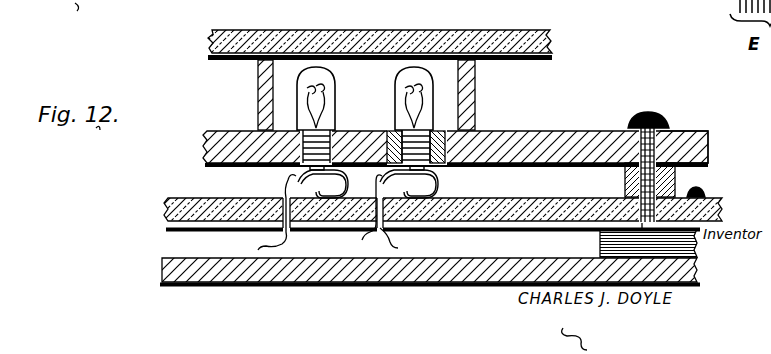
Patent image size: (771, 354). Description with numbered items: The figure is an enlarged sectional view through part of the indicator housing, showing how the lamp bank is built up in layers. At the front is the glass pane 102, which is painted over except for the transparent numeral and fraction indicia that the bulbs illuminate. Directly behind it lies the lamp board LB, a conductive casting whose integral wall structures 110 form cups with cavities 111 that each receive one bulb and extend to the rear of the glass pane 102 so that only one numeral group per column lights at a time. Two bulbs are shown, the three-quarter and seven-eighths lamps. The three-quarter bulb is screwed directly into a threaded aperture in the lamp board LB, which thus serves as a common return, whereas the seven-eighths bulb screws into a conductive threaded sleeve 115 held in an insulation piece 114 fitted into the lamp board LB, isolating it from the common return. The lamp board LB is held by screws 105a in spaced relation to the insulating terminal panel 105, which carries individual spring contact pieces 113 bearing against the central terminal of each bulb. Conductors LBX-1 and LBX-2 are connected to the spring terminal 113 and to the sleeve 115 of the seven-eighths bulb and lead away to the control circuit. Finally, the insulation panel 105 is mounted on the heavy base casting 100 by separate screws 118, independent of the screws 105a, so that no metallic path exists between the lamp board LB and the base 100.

The base casting 100 is at (190, 284).
The glass pane 102 is at (232, 46).
The insulating board 105 is at (570, 193).
The screws 105a is at (663, 97).
The integral wall structures 110 is at (258, 80).
The cavities 111 is at (375, 63).
The spring contact pieces 113 is at (300, 173).
The insulation piece 114 is at (450, 167).
The conductive threaded sleeve 115 is at (480, 130).
The screws 118 is at (702, 190).
The lamp board LB is at (694, 135).
The conductor LBX-1 is at (372, 243).
The conductor LBX-2 is at (345, 250).